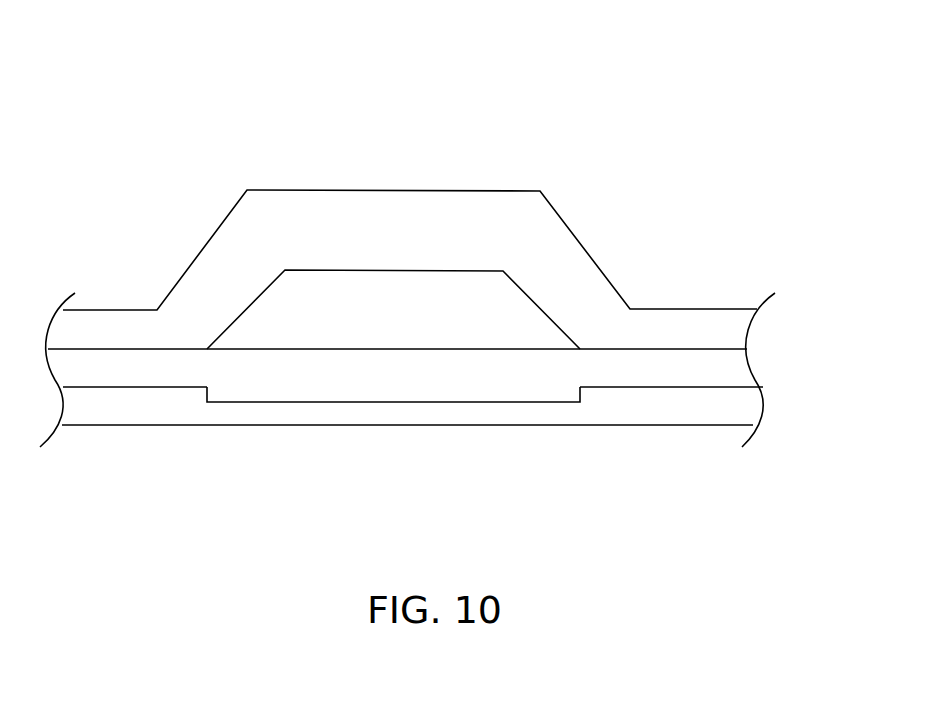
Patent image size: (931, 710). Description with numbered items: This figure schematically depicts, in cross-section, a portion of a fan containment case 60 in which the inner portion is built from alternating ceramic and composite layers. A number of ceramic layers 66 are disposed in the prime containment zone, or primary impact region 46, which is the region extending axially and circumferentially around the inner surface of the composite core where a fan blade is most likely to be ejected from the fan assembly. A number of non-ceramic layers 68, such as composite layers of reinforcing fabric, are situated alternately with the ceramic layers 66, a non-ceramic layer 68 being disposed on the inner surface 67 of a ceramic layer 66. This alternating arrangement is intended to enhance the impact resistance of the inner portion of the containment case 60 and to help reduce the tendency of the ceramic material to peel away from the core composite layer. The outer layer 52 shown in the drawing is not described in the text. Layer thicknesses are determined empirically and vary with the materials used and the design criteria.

The containment case 60 is at (695, 53).
The primary impact region 46 is at (385, 445).
The encapsulant / cover layer 52 is at (315, 197).
The ceramic layer 66 is at (385, 323).
The inner surface 67 is at (600, 347).
The non-ceramic layer 68 is at (640, 362).